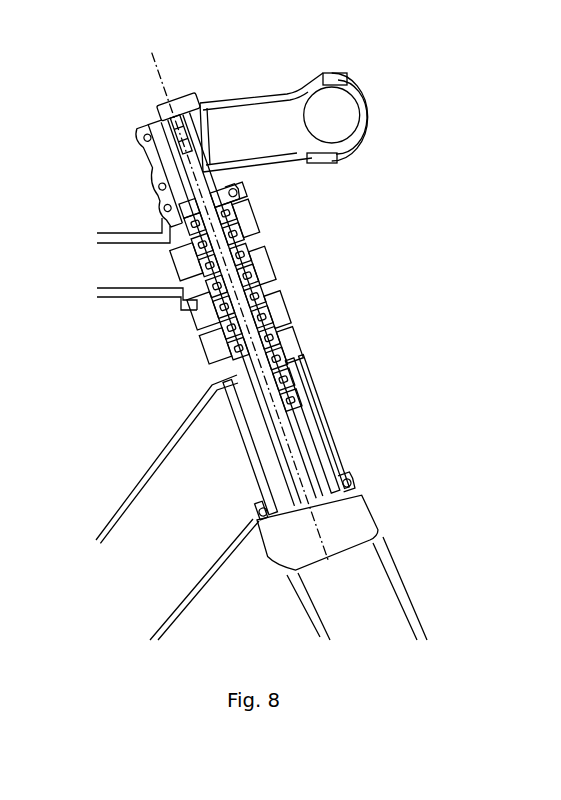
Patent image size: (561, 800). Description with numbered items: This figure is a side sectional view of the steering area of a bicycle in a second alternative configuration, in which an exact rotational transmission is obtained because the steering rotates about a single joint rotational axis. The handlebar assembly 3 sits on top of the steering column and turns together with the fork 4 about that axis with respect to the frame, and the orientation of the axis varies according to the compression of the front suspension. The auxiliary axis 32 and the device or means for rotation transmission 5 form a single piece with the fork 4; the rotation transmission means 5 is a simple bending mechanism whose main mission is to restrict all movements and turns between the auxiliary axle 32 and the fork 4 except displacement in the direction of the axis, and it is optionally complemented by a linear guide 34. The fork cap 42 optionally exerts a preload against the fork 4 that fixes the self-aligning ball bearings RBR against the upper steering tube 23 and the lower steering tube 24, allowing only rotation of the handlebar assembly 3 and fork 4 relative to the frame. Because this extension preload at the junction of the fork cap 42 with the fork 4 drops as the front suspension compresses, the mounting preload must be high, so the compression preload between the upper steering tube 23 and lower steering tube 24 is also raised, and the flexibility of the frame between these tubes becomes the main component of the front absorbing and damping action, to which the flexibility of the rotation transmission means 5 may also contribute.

The handlebar assembly 3 is at (279, 64).
The fork 4 is at (289, 611).
The device or means for rotation transmission 5 is at (278, 298).
The upper steering tube 23 is at (137, 272).
The lower steering tube 24 is at (195, 452).
The auxiliary axis 32 is at (181, 207).
The linear guide 34 is at (277, 474).
The fork cap 42 is at (191, 97).
The self-aligning ball bearings RBR is at (250, 195).